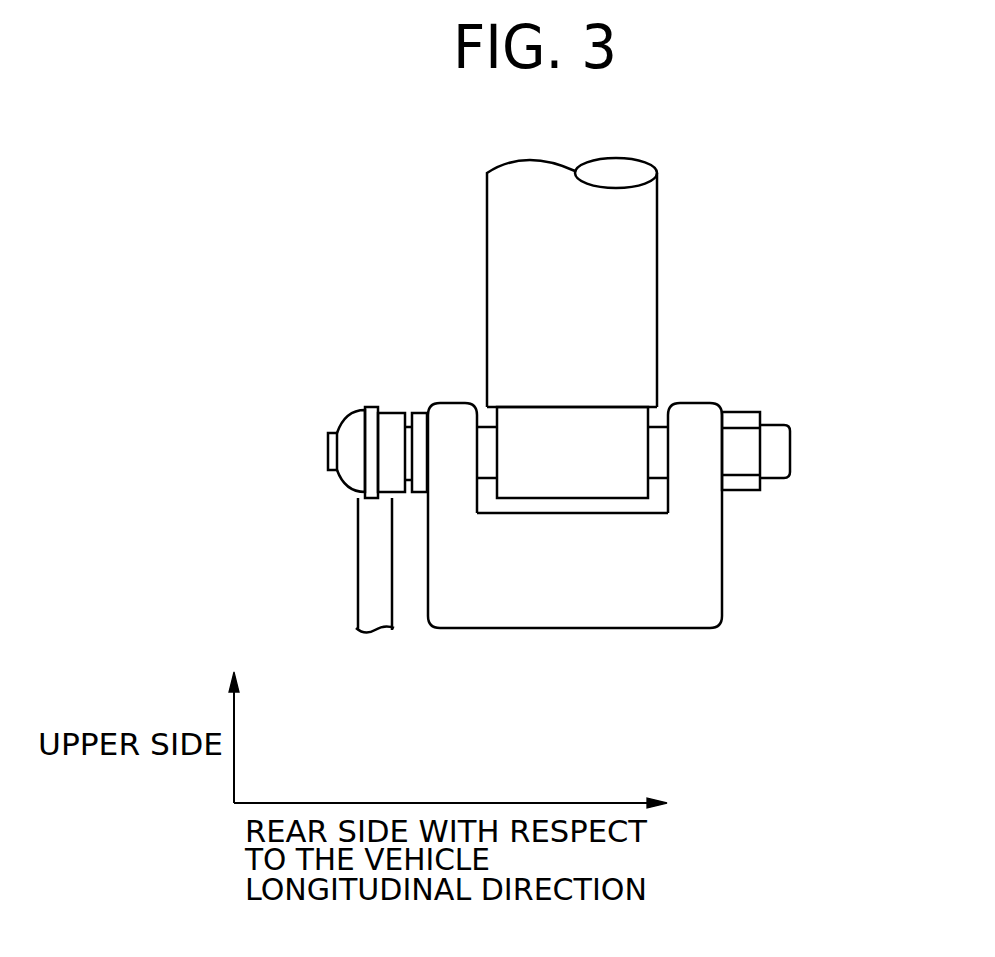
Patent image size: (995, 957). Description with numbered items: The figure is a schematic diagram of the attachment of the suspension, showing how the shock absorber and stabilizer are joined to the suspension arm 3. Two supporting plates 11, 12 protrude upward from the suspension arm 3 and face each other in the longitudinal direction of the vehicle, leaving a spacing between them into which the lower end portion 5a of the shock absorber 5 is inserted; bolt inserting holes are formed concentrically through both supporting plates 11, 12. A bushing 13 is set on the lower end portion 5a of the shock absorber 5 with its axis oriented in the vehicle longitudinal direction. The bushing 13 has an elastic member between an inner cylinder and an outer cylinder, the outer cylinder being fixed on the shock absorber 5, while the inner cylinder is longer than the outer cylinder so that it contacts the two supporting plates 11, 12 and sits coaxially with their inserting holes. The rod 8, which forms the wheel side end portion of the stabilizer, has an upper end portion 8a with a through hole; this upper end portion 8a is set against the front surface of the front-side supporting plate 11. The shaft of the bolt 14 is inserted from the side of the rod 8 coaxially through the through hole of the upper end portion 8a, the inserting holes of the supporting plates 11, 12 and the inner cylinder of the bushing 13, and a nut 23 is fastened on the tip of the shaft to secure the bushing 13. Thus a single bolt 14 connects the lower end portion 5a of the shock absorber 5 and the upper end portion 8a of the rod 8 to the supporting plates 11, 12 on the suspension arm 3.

The suspension arm 3 is at (712, 562).
The shock absorber 5 is at (646, 236).
The lower end portion 5a is at (603, 405).
The rod 8 is at (367, 553).
The upper end portion 8a is at (352, 428).
The supporting plate 11 is at (448, 415).
The supporting plate 12 is at (693, 410).
The bushing 13 is at (572, 487).
The bolt 14 is at (785, 453).
The nut 23 is at (740, 420).